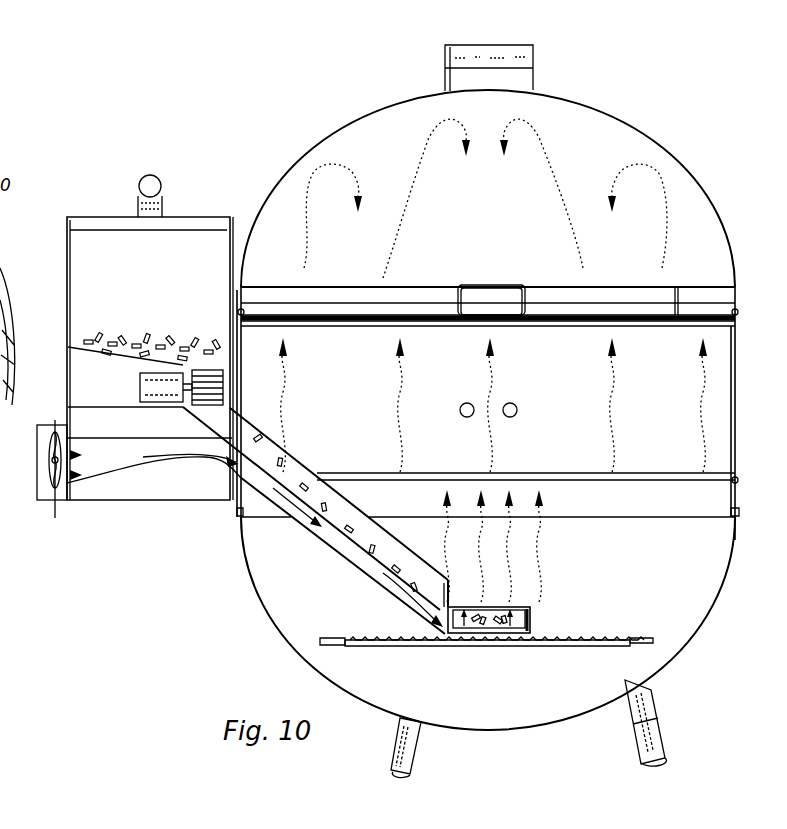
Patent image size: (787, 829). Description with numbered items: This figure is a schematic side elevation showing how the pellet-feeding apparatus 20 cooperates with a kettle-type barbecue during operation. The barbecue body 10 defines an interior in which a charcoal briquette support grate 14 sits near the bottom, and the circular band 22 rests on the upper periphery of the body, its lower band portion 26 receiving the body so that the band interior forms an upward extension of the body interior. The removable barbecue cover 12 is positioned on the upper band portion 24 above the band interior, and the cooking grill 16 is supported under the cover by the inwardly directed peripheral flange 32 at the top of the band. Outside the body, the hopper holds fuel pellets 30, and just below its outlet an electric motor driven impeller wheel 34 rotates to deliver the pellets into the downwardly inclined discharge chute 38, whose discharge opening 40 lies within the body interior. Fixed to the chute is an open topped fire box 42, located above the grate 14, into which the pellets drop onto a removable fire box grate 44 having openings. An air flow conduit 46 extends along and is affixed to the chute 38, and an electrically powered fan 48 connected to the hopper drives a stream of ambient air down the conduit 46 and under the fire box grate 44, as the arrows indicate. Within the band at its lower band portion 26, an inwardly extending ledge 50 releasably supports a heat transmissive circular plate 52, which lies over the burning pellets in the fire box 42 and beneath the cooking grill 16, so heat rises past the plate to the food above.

The barbecue body 10 is at (704, 603).
The barbecue cover 12 is at (609, 118).
The charcoal briquette support grate 14 is at (357, 640).
The cooking grill 16 is at (675, 305).
The apparatus 20 is at (749, 383).
The circular band 22 is at (737, 352).
The upper band portion 24 is at (327, 340).
The lower band portion 26 is at (722, 445).
The fuel pellets 30 is at (176, 340).
The inwardly directed peripheral flange 32 is at (531, 327).
The impeller wheel 34 is at (224, 380).
The discharge chute 38 is at (292, 455).
The discharge opening 40 is at (422, 572).
The fire box 42 is at (525, 609).
The fire box grate 44 is at (505, 629).
The air flow conduit 46 is at (340, 542).
The fan 48 is at (57, 440).
The ledge 50 is at (722, 483).
The circular plate 52 is at (540, 470).